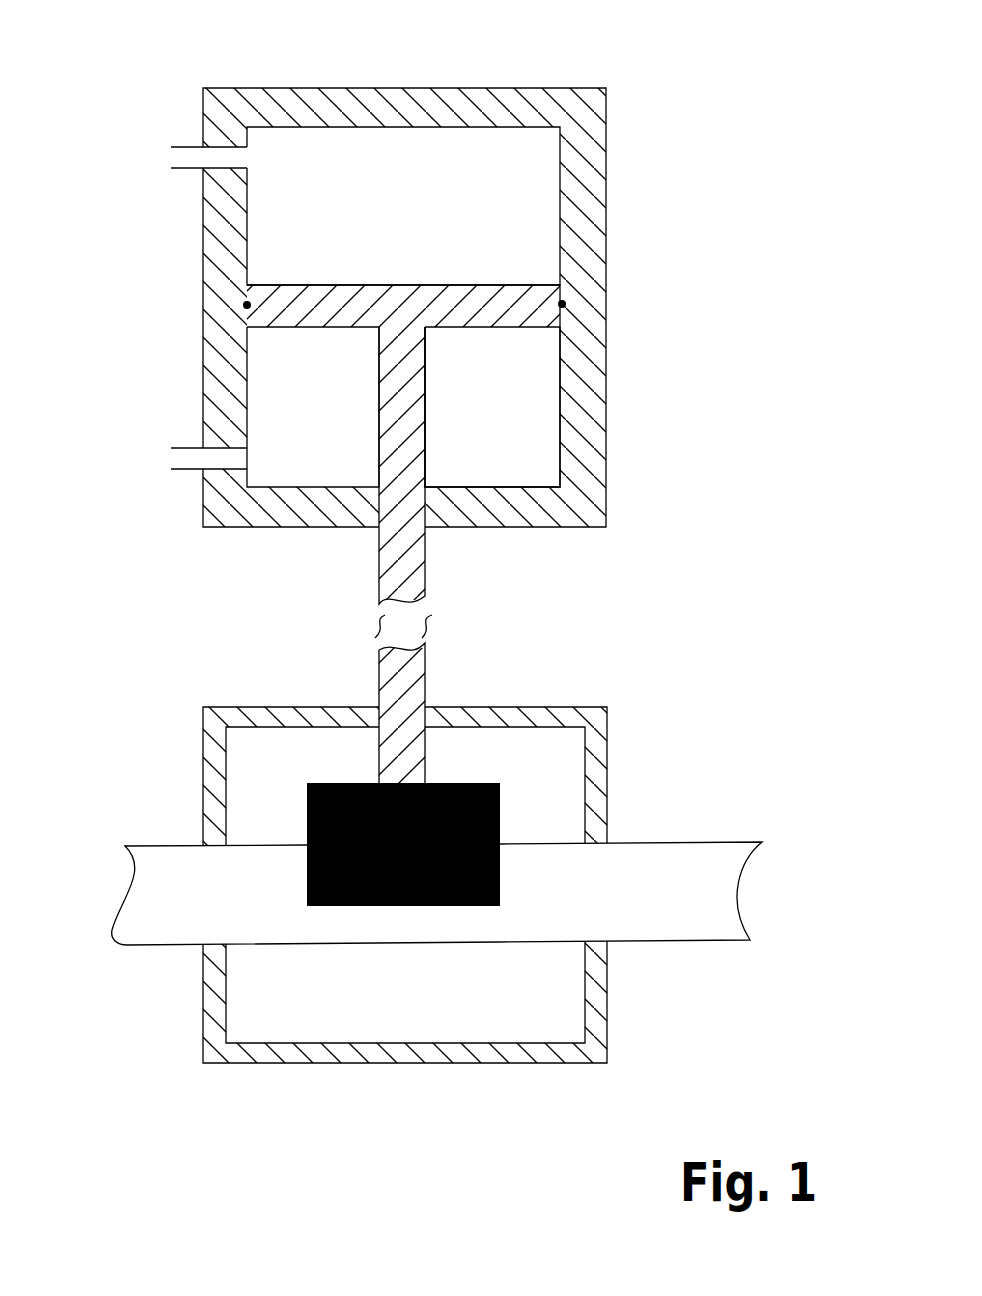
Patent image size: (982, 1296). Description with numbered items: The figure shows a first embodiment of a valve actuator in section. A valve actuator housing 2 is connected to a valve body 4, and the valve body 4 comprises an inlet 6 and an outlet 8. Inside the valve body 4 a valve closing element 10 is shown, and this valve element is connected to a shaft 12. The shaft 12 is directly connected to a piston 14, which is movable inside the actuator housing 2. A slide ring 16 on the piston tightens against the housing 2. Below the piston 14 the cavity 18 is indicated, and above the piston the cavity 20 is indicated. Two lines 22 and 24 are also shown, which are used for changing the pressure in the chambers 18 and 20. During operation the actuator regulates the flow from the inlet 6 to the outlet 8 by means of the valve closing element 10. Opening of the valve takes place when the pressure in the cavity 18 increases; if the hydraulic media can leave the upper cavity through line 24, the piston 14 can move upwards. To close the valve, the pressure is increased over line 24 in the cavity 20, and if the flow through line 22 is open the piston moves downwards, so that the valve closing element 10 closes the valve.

The valve actuator housing 2 is at (730, 90).
The valve body 4 is at (718, 685).
The inlet 6 is at (167, 943).
The outlet 8 is at (645, 940).
The valve closing element 10 is at (490, 783).
The shaft 12 is at (422, 688).
The piston 14 is at (527, 313).
The slide ring 16 is at (562, 304).
The cavity 18 is at (523, 443).
The cavity 20 is at (425, 224).
The line 22 is at (171, 470).
The line 24 is at (171, 169).